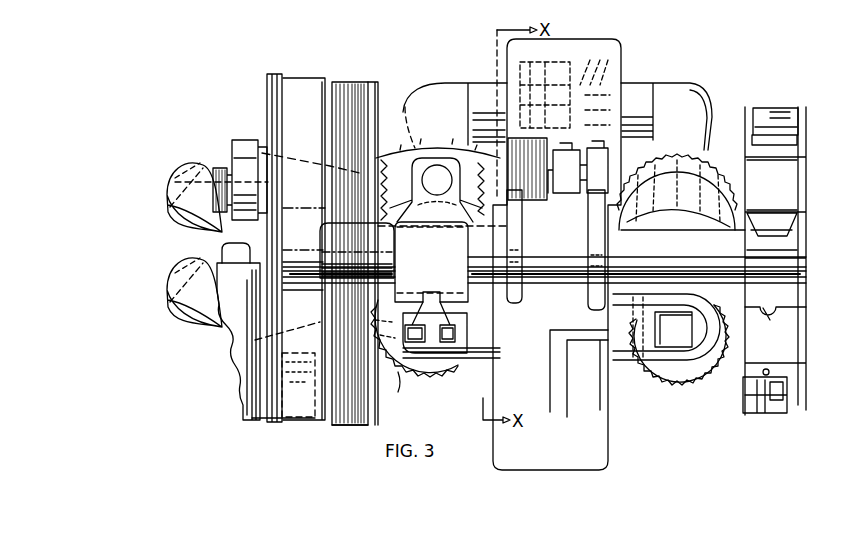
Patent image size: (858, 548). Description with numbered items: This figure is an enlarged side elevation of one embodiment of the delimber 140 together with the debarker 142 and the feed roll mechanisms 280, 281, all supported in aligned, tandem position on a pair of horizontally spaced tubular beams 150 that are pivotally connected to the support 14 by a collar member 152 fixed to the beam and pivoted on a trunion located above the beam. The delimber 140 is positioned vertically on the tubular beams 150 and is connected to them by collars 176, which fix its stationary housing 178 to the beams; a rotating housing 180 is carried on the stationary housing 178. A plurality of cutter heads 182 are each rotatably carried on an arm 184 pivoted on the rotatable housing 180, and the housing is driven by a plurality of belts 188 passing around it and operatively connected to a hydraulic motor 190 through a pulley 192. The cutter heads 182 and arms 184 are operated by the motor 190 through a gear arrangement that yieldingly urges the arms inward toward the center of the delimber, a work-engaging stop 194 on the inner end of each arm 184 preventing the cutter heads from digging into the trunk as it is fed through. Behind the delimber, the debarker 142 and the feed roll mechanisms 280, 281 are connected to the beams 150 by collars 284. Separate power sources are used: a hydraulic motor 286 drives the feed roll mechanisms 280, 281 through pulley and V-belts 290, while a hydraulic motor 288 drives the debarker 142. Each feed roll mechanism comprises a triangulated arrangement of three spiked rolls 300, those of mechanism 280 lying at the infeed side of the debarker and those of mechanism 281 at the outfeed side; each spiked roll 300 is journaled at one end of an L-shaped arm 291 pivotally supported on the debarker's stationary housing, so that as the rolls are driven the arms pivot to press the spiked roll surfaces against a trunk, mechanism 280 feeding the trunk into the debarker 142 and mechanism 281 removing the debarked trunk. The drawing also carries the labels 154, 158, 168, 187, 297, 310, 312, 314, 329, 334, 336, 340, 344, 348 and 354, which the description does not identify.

The support 14 is at (442, 151).
The delimber 140 is at (275, 72).
The debarker 142 is at (632, 80).
The tubular beam 150 is at (532, 285).
The collar member 152 is at (470, 238).
The block 154 is at (425, 368).
The block 158 is at (445, 345).
The guide 168 is at (380, 356).
The collar 176 is at (312, 212).
The stationary housing 178 is at (305, 78).
The rotating housing 180 is at (376, 82).
The cutter head 182 is at (193, 158).
The arm 184 is at (245, 141).
The blade edge 187 is at (191, 231).
The belt 188 is at (352, 82).
The hydraulic motor 190 is at (286, 398).
The pulley 192 is at (367, 423).
The work-engaging stop 194 is at (238, 250).
The feed roll mechanism 280 is at (450, 94).
The feed roll mechanism 281 is at (718, 95).
The collar 284 is at (592, 239).
The hydraulic motor 286 is at (592, 195).
The hydraulic motor 288 is at (545, 84).
The pulley and V-belts 290 is at (513, 156).
The L-shaped arm 291 is at (407, 108).
The hidden member 297 is at (597, 83).
The spiked roll 300 is at (404, 159).
The bracket 310 is at (746, 142).
The bracket block 312 is at (792, 236).
The bracket line 314 is at (746, 248).
The box 329 is at (600, 328).
The block 334 is at (778, 108).
The block 336 is at (758, 413).
The bracket body 340 is at (783, 177).
The plate 344 is at (768, 128).
The inner block 348 is at (768, 400).
The notch 354 is at (770, 318).